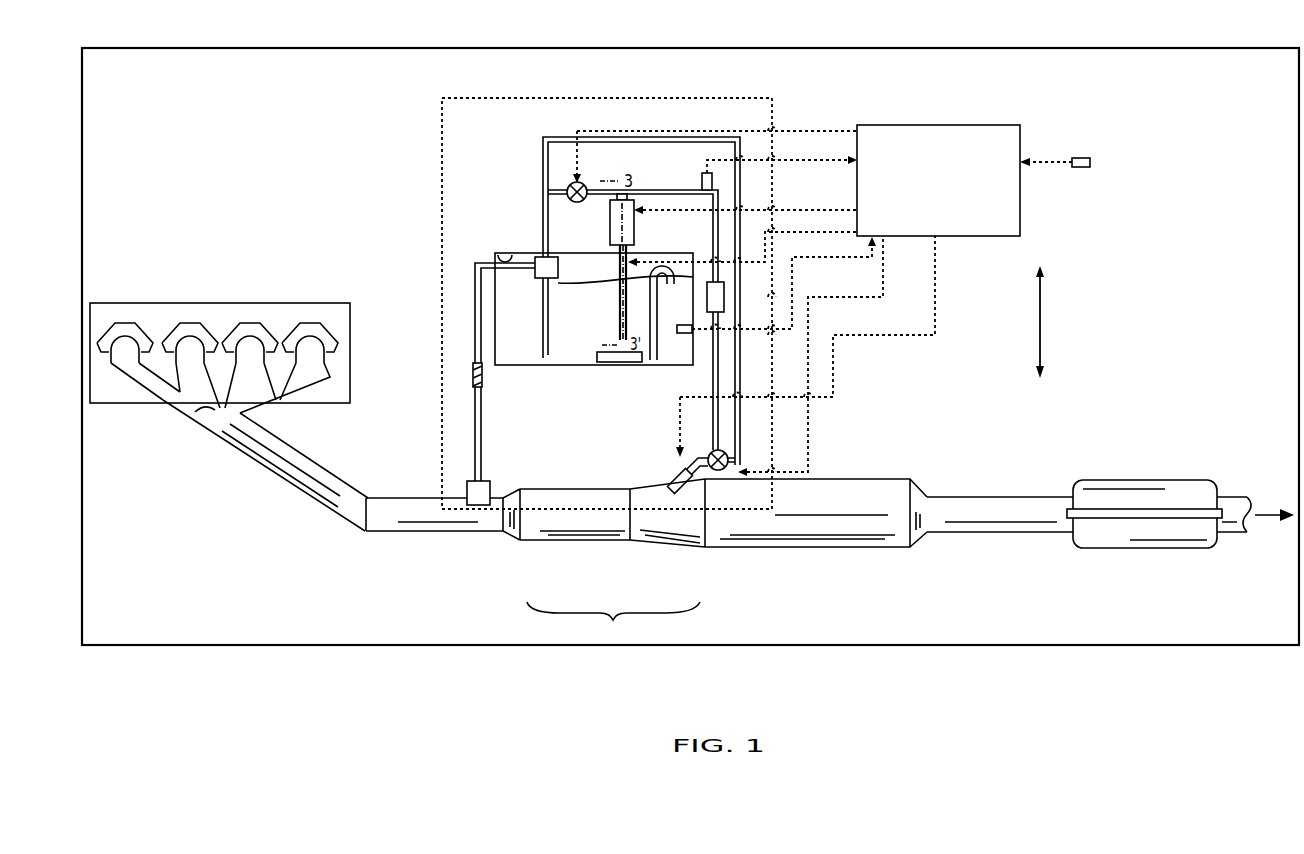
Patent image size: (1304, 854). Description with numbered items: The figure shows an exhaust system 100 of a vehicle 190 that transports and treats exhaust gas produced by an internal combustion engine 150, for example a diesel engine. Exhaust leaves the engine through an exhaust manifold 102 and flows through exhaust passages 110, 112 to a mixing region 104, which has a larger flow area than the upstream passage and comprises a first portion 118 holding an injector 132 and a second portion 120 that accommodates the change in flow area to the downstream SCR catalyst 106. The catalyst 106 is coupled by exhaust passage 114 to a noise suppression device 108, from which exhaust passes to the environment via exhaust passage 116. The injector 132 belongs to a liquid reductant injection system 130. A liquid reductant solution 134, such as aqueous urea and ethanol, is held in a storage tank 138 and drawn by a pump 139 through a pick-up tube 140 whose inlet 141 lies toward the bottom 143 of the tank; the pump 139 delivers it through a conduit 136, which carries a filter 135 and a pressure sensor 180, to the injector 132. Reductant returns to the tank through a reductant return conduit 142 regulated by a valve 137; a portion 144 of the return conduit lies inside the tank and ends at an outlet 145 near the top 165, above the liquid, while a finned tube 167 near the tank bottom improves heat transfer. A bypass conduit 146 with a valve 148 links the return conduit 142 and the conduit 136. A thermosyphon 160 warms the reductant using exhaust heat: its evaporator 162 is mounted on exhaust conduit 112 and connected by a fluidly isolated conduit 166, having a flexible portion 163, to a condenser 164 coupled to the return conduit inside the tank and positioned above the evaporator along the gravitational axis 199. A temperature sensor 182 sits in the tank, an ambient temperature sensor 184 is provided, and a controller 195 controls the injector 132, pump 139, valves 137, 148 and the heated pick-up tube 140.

The exhaust system 100 is at (224, 506).
The exhaust manifold 102 is at (178, 402).
The mixing region 104 is at (613, 621).
The selective catalytic reduction (SCR) catalyst 106 is at (823, 478).
The noise suppression device 108 is at (1145, 480).
The exhaust passage 110 is at (290, 487).
The exhaust passage (exhaust conduit) 112 is at (373, 497).
The exhaust passage 114 is at (985, 497).
The exhaust passage 116 is at (1232, 497).
The first portion 118 is at (527, 545).
The second portion 120 is at (650, 548).
The liquid reductant injection system 130 is at (452, 98).
The injector 132 is at (677, 460).
The liquid reductant solution 134 is at (579, 336).
The filter 135 is at (725, 303).
The conduit 136 is at (693, 190).
The valve 137 is at (726, 452).
The storage tank 138 is at (550, 255).
The pump 139 is at (634, 218).
The pick-up tube 140 is at (620, 322).
The inlet 141 is at (622, 342).
The reductant return conduit 142 is at (543, 240).
The bottom 143 is at (677, 364).
The portion 144 is at (543, 327).
The outlet 145 is at (657, 268).
The bypass conduit 146 is at (593, 186).
The valve 148 is at (577, 203).
The internal combustion engine 150 is at (350, 333).
The thermosyphon 160 is at (466, 313).
The evaporator 162 is at (493, 488).
The flexible portion 163 is at (473, 375).
The condenser 164 is at (558, 266).
The top 165 is at (500, 257).
The fluidly isolated conduit 166 is at (481, 394).
The finned tube 167 is at (635, 363).
The pressure sensor 180 is at (704, 173).
The temperature sensor 182 is at (680, 325).
The ambient temperature sensor 184 is at (1086, 158).
The vehicle 190 is at (136, 48).
The controller 195 is at (953, 189).
The gravitational axis 199 is at (1040, 328).